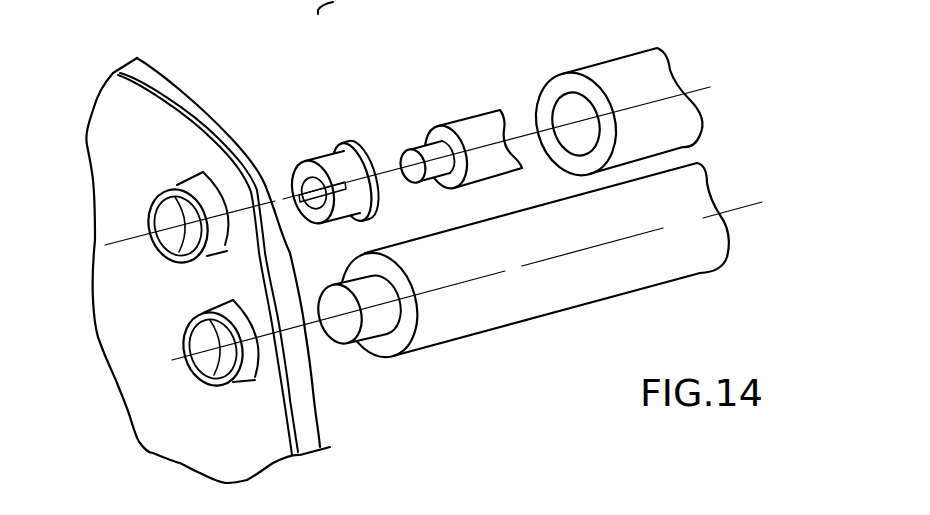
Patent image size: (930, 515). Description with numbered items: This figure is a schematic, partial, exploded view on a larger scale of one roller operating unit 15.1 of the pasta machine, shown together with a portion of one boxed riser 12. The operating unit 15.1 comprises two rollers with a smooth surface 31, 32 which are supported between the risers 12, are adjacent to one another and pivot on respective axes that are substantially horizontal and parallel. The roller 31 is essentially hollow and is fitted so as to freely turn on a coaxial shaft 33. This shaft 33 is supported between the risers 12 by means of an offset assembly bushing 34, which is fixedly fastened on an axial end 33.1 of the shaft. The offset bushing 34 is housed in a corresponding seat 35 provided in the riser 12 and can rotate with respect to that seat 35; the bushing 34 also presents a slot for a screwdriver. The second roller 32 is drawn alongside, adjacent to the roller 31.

The boxed riser 12 is at (127, 332).
The seat 35 is at (167, 213).
The offset assembly bushing 34 is at (335, 142).
The axial end of the shaft 33.1 is at (405, 150).
The shaft 33 is at (480, 132).
The roller 31 is at (608, 50).
The roller 32 is at (692, 281).
The operating unit 15.1 is at (554, 183).